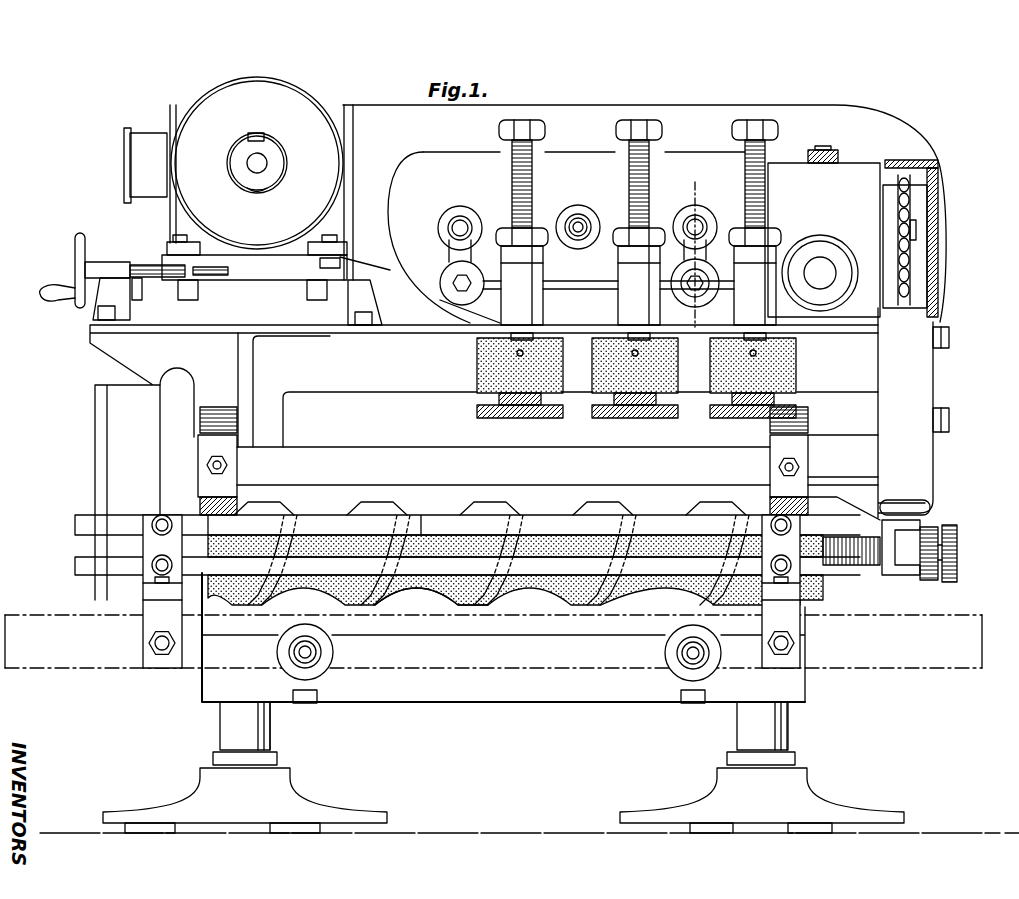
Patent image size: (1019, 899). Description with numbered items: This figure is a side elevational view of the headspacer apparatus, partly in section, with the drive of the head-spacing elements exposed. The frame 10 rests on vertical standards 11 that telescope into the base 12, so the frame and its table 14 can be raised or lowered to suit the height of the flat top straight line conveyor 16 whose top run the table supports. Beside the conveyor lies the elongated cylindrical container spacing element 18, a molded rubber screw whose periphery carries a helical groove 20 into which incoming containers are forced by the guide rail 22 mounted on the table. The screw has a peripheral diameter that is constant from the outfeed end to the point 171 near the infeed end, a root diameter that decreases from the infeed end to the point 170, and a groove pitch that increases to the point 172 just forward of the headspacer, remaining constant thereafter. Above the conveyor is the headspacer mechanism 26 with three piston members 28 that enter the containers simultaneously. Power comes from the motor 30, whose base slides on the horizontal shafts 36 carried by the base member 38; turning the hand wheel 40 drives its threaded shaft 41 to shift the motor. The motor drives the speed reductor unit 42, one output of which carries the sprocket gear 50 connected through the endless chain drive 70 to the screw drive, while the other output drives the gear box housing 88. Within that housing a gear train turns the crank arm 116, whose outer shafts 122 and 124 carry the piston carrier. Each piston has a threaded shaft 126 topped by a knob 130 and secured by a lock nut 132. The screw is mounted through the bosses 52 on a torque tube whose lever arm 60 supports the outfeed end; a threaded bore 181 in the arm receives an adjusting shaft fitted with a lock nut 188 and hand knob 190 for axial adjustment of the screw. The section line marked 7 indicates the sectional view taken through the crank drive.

The section line 7- 7 is at (680, 192).
The frame 10 is at (88, 345).
The standards 11 is at (220, 737).
The base 12 is at (292, 785).
The table 14 is at (808, 688).
The conveyor 16 is at (68, 615).
The cylindrical container spacing element 18 is at (432, 610).
The helical groove 20 is at (608, 588).
The guide rail 22 is at (493, 607).
The headspacer mechanism 26 is at (659, 226).
The piston members 28 is at (803, 362).
The unitary source of power 30 is at (197, 118).
The horizontal shafts 36 is at (238, 288).
The base member 38 is at (83, 306).
The hand wheel 40 is at (75, 245).
The threaded shaft 41 is at (152, 263).
The speed reductor unit 42 is at (864, 162).
The sprocket gear 50 is at (912, 186).
The bosses 52 is at (240, 418).
The lever arm 60 is at (903, 575).
The endless chain drive 70 is at (908, 296).
The gear box housing 88 is at (418, 151).
The crank arm 116 is at (447, 250).
The shaft 122 is at (686, 292).
The shaft 124 is at (458, 288).
The threaded shaft 126 is at (512, 178).
The knob 130 is at (548, 127).
The lock nut 132 is at (536, 232).
The point of constant root diameter 170 is at (382, 590).
The point of constant peripheral diameter 171 is at (240, 502).
The point of constant pitch 172 is at (393, 506).
The threaded bore 181 is at (872, 567).
The lock nut 188 is at (927, 580).
The hand knob 190 is at (958, 568).